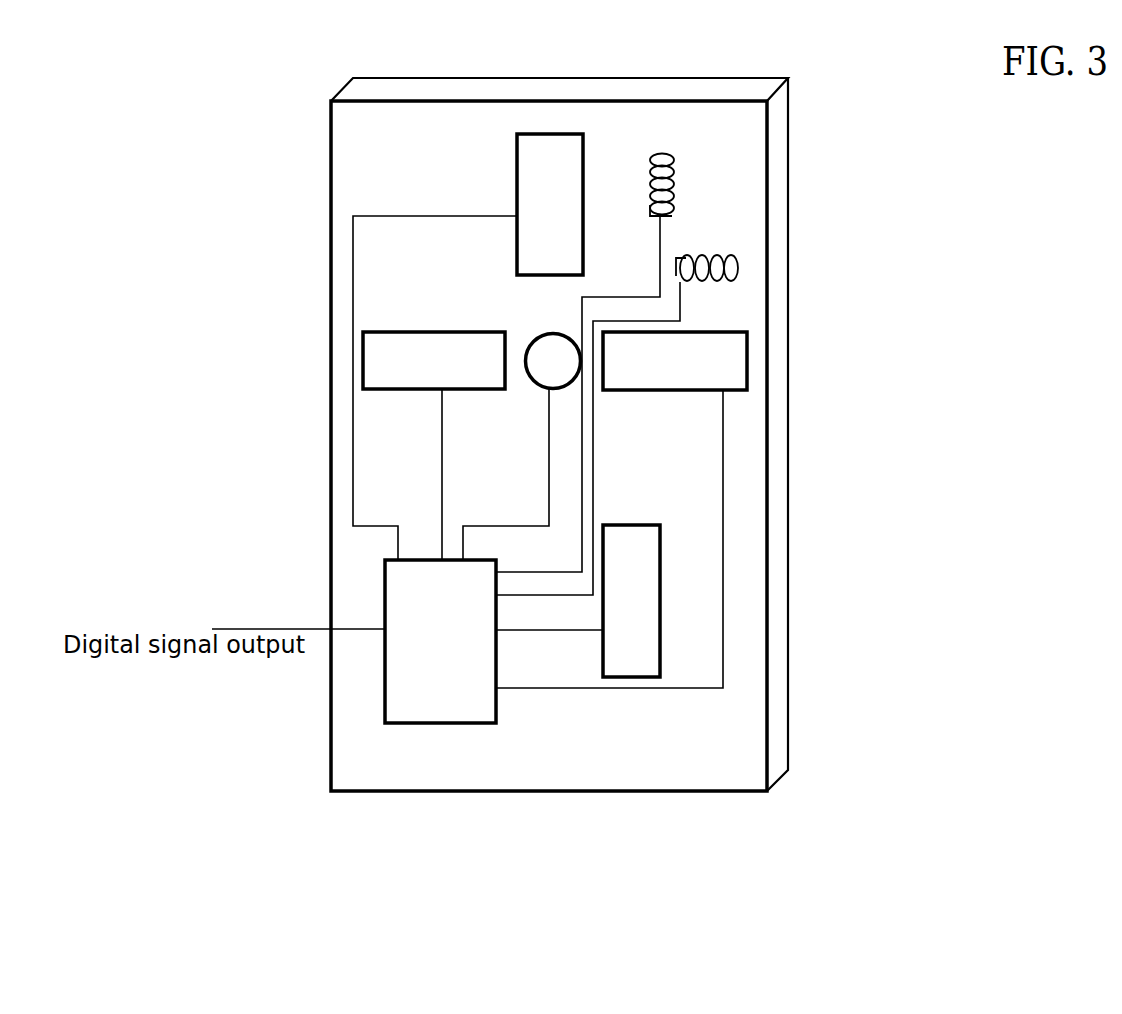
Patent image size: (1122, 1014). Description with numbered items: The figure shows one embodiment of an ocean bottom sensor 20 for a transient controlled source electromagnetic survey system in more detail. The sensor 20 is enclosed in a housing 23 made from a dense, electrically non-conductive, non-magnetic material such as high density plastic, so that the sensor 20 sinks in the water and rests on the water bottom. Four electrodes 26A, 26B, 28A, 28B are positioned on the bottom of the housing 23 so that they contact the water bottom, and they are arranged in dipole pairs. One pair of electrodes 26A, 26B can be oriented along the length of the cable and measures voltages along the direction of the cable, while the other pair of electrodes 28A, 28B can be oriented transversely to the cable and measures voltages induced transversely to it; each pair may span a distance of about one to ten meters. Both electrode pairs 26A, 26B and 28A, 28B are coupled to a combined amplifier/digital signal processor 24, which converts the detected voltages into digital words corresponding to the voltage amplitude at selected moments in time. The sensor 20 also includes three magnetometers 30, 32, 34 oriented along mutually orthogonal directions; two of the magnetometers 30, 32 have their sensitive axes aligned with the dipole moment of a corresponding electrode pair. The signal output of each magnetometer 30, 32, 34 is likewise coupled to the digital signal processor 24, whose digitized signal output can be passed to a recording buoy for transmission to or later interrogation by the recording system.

The sensor 20 is at (468, 841).
The housing 23 is at (617, 791).
The combined amplifier/digital signal processor 24 is at (386, 698).
The electrode 26A is at (385, 354).
The electrode 26B is at (725, 355).
The electrode 28A is at (637, 584).
The electrode 28B is at (549, 183).
The magnetometer 30 is at (673, 183).
The magnetometer 32 is at (732, 263).
The magnetometer 34 is at (560, 365).